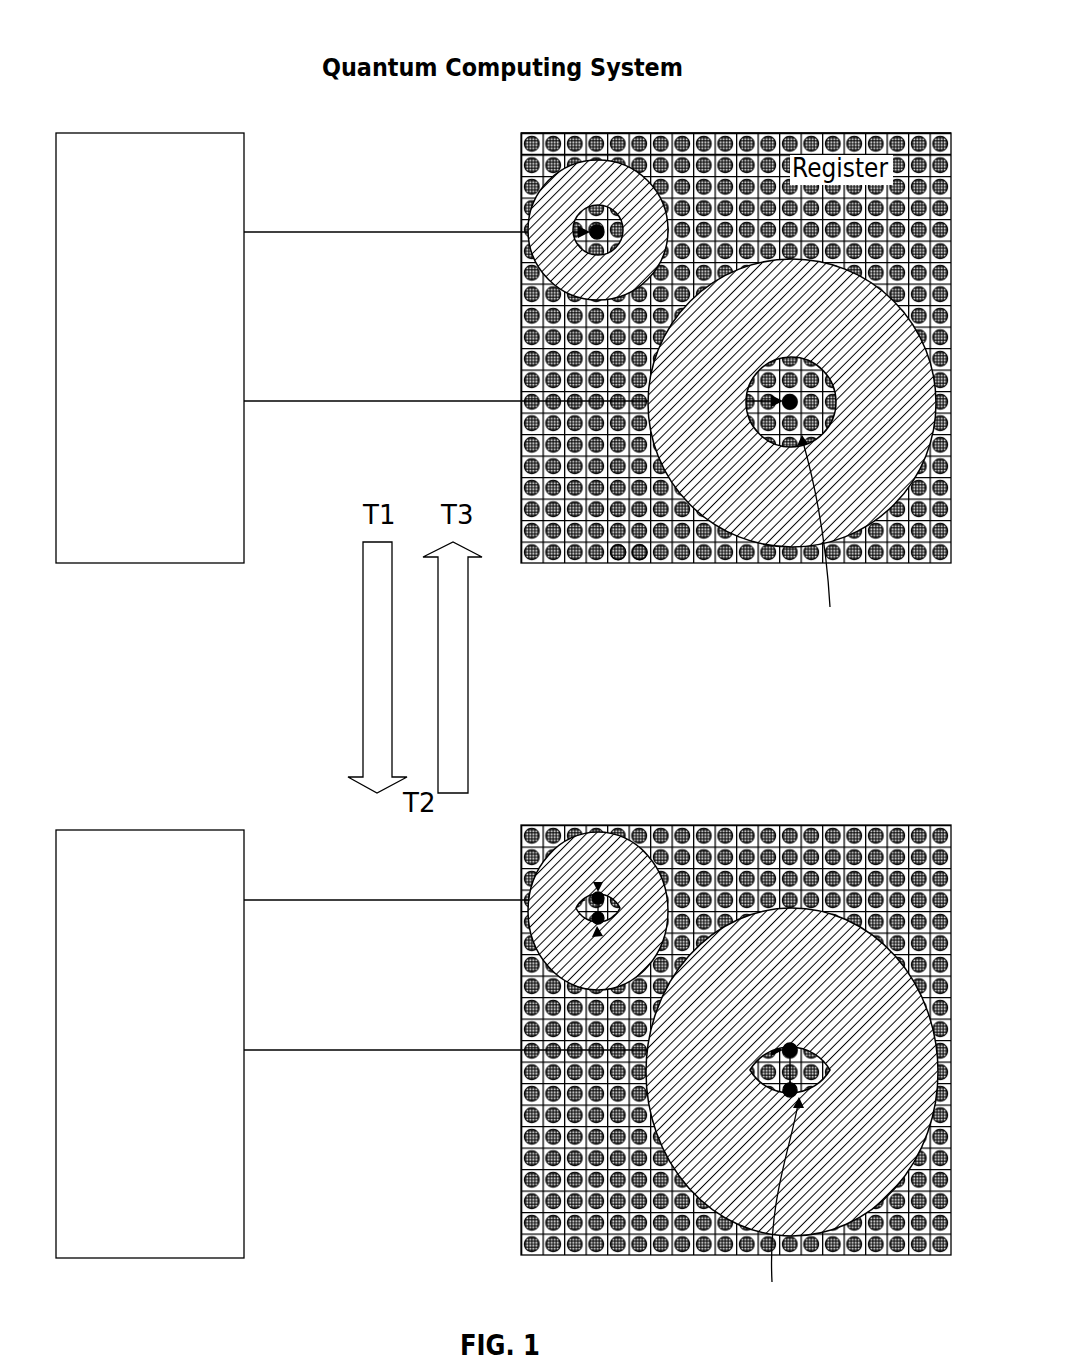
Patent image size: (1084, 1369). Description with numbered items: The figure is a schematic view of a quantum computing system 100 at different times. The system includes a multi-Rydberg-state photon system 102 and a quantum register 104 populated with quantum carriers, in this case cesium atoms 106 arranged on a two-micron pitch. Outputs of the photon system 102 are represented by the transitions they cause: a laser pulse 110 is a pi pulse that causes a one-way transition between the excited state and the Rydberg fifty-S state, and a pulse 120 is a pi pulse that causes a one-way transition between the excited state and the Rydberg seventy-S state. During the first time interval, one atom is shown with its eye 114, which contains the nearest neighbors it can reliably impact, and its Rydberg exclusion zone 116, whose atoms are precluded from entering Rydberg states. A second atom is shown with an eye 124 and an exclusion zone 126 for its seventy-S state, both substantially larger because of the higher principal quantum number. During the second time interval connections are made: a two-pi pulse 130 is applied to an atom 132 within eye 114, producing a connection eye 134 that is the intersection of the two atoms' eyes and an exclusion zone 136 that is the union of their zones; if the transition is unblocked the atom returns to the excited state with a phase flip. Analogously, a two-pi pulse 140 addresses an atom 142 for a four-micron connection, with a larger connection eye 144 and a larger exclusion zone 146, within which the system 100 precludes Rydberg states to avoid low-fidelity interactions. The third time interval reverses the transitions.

The quantum computing system 100 is at (143, 17).
The multi-Rydberg-state photon system 102 is at (123, 133).
The quantum register 104 is at (848, 133).
The cesium atoms 106 is at (637, 552).
The laser pulse 110 is at (277, 232).
The eye 114 is at (724, 133).
The Rydberg exclusion zone 116 is at (572, 183).
The pulse 120 is at (268, 401).
The eye 124 is at (826, 536).
The Rydberg exclusion zone 126 is at (683, 363).
The 2π pulse 130 is at (278, 900).
The atom 132 is at (597, 888).
The eye 134 is at (596, 934).
The Rydberg exclusion zone 136 is at (597, 884).
The 2π pulse 140 is at (268, 1050).
The atom 142 is at (789, 1040).
The eye 144 is at (778, 1201).
The Rydberg exclusion zone 146 is at (814, 935).